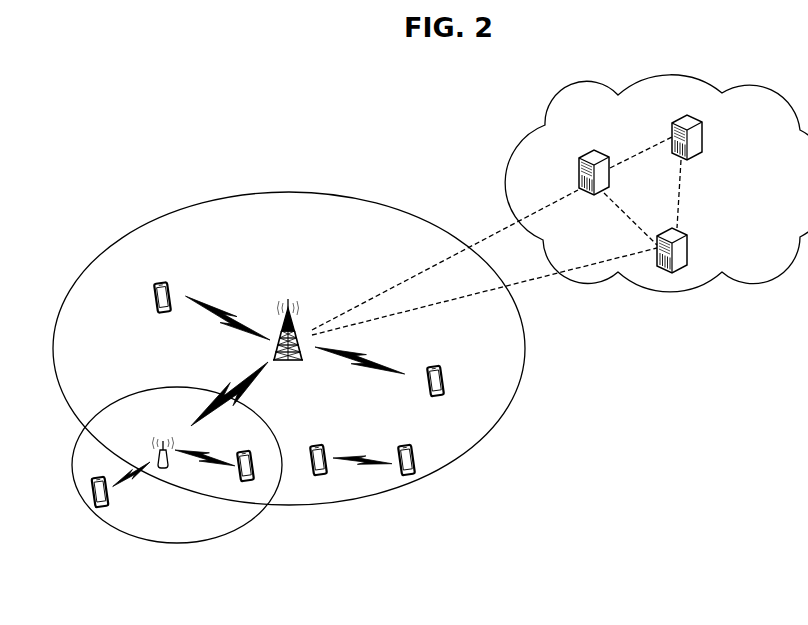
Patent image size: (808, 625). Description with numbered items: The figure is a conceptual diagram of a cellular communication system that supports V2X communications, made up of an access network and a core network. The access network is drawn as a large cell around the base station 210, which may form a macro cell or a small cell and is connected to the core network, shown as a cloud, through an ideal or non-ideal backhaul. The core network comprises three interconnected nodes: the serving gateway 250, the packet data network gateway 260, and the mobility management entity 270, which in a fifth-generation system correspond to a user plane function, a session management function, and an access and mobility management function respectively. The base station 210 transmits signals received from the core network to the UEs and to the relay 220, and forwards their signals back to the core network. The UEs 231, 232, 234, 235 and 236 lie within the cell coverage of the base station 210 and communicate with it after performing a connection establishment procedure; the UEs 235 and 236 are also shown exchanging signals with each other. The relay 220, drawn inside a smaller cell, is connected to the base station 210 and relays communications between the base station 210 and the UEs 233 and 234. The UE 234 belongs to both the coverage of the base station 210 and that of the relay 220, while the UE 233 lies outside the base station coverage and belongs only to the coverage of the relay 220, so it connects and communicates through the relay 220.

The base station 210 is at (288, 303).
The relay 220 is at (163, 438).
The user equipment 231 is at (162, 280).
The user equipment 232 is at (433, 365).
The user equipment 233 is at (100, 510).
The user equipment 234 is at (245, 482).
The user equipment 235 is at (316, 443).
The user equipment 236 is at (403, 443).
The serving gateway 250 is at (590, 148).
The packet data network gateway 260 is at (702, 136).
The mobility management entity 270 is at (686, 249).